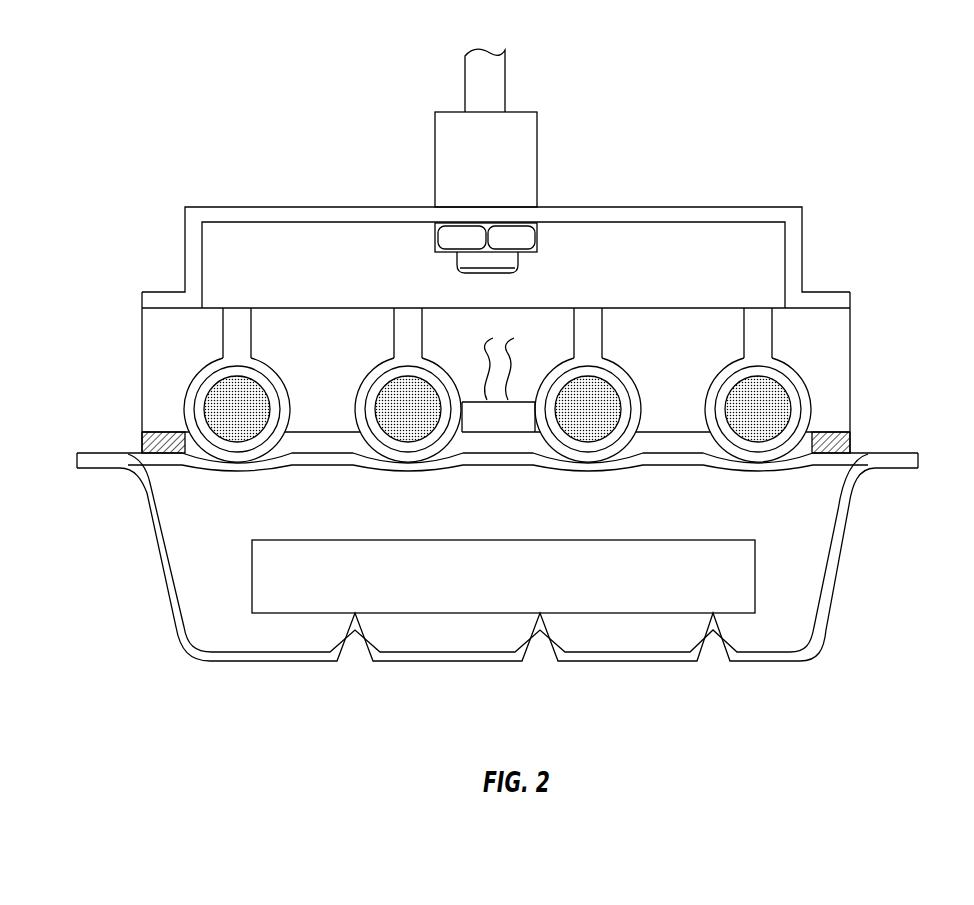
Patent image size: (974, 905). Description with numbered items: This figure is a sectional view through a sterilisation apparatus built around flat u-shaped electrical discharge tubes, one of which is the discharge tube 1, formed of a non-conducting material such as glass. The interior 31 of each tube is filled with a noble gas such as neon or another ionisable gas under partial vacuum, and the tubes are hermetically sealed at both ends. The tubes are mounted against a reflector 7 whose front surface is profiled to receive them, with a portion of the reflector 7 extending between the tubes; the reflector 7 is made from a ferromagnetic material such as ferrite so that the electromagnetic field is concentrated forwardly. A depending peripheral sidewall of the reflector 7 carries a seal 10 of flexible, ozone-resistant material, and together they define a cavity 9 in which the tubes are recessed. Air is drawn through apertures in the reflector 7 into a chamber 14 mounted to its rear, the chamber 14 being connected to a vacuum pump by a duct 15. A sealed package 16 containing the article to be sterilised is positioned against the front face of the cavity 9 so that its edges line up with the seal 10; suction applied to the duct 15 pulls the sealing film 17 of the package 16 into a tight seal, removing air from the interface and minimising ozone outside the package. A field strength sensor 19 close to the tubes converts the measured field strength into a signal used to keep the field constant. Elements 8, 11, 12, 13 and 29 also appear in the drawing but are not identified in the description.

The electrical discharge tube 1 is at (193, 352).
The reflector 7 is at (838, 333).
The heating element 8 is at (805, 366).
The cavity 9 is at (305, 440).
The seal 10 is at (850, 440).
The web 11 is at (575, 318).
The cover plate 12 is at (640, 302).
The web 13 is at (230, 340).
The chamber 14 is at (308, 243).
The duct 15 is at (518, 148).
The sealed package 16 is at (847, 518).
The sealing film 17 is at (195, 455).
The field strength sensor 19 is at (493, 418).
The drawer 29 is at (625, 598).
The interior 31 is at (775, 405).